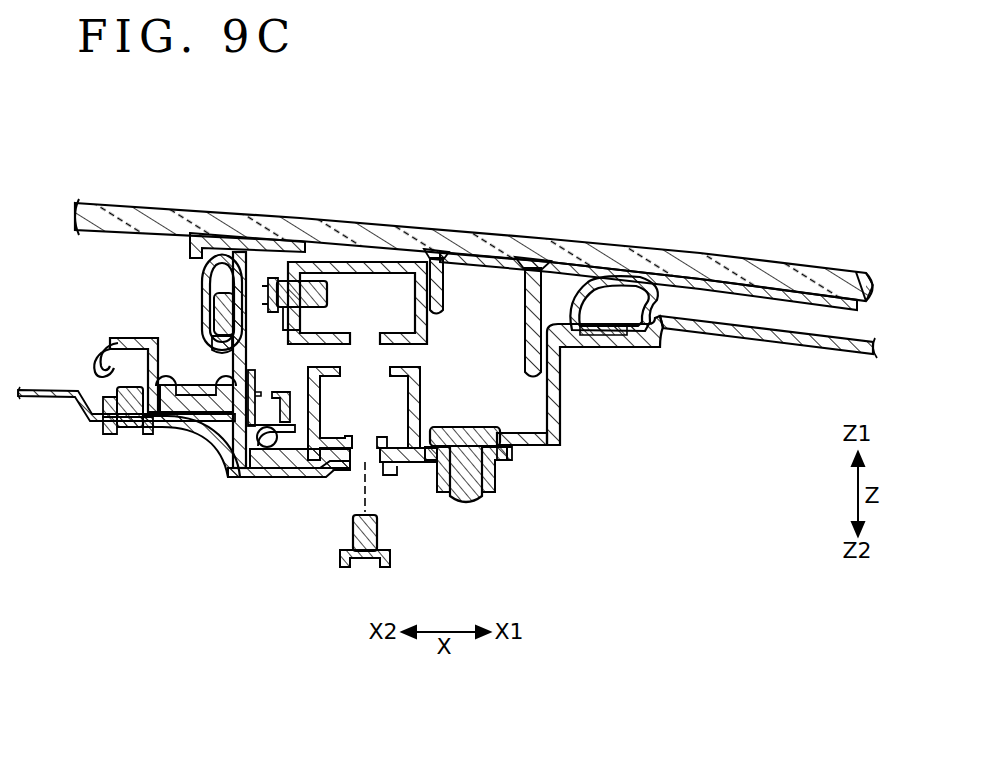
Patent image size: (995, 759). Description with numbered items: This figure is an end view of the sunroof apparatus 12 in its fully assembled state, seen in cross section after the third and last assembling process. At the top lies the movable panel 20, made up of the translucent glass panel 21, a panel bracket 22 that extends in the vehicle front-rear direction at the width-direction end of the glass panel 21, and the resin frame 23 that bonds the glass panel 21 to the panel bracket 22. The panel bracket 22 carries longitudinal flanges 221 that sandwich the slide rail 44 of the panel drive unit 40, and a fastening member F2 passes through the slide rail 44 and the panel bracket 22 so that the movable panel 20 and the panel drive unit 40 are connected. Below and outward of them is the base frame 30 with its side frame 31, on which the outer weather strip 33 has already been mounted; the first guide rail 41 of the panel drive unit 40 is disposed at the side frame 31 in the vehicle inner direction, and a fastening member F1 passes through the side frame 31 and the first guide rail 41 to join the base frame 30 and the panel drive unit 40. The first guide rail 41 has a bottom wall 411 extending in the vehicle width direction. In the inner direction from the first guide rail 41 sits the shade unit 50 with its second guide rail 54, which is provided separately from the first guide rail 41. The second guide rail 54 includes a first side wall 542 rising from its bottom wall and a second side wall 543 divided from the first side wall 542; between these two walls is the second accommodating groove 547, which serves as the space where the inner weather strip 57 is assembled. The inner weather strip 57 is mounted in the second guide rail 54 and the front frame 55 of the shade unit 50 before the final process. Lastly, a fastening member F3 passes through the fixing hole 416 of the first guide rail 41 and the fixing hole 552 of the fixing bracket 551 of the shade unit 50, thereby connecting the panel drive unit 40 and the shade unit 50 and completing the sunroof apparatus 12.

The sunroof apparatus 12 is at (616, 528).
The movable panel 20 is at (474, 276).
The glass panel 21 is at (720, 257).
The panel bracket 22 is at (256, 246).
The resin frame 23 is at (867, 274).
The longitudinal flange 221 is at (443, 295).
The slide rail 44 is at (400, 265).
The fastening member F2 is at (328, 293).
The inner weather strip 57 is at (203, 265).
The second side wall 543 is at (208, 310).
The second accommodating groove 547 is at (220, 352).
The shade unit 50 is at (160, 380).
The second guide rail 54 is at (123, 327).
The first side wall 542 is at (248, 322).
The front frame 55 is at (53, 400).
The panel drive unit 40 is at (403, 396).
The first guide rail 41 is at (243, 470).
The bottom wall 411 is at (508, 450).
The base frame 30 is at (723, 295).
The side frame 31 is at (727, 334).
The outer weather strip 33 is at (590, 279).
The fixing hole 416 is at (373, 443).
The fixing bracket 551 is at (298, 478).
The fixing hole 552 is at (378, 478).
The fastening member F1 is at (470, 426).
The fastening member F3 is at (378, 540).